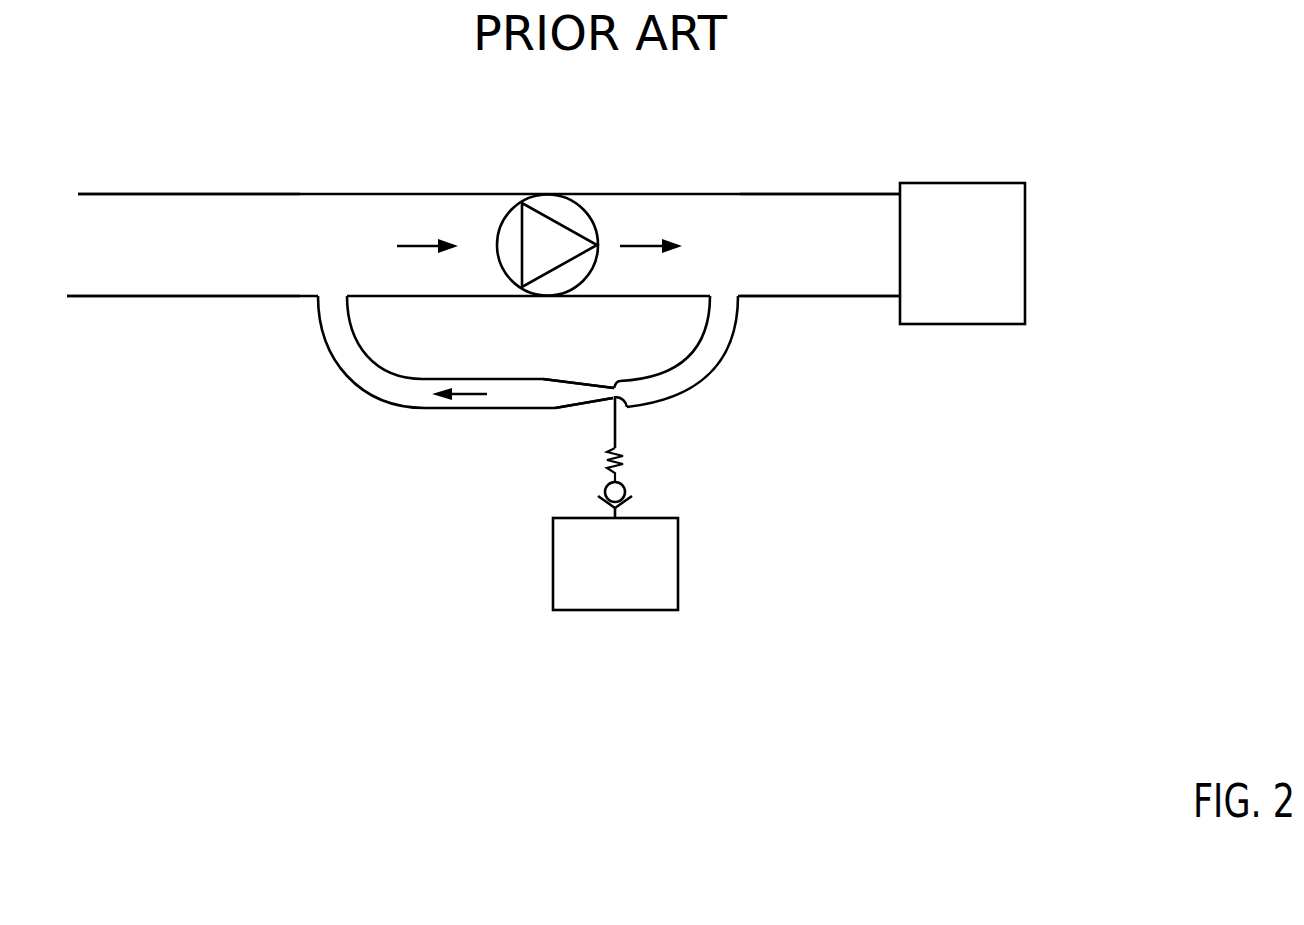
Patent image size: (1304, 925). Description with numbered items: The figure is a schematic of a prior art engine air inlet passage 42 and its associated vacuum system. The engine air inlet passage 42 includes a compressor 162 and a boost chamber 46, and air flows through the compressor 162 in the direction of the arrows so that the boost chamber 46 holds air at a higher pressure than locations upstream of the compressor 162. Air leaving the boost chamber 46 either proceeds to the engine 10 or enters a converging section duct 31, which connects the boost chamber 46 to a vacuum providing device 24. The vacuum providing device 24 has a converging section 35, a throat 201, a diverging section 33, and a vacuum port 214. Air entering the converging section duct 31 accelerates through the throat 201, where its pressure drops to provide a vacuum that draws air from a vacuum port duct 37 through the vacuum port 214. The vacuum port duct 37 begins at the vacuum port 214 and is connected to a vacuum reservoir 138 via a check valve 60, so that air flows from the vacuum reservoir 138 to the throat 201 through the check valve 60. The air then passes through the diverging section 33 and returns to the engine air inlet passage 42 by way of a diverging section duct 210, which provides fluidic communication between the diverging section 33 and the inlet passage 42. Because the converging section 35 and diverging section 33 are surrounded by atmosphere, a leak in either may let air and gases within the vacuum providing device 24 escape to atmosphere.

The engine 10 is at (975, 260).
The engine air inlet passage 42 is at (163, 255).
The boost chamber 46 is at (795, 260).
The compressor 162 is at (548, 194).
The vacuum providing device 24 is at (550, 387).
The converging section duct 31 is at (725, 353).
The diverging section 33 is at (572, 380).
The throat 201 is at (620, 381).
The diverging section duct 210 is at (446, 379).
The vacuum port 214 is at (611, 402).
The converging section 35 is at (666, 399).
The vacuum port duct 37 is at (617, 440).
The check valve 60 is at (603, 490).
The vacuum reservoir 138 is at (635, 575).